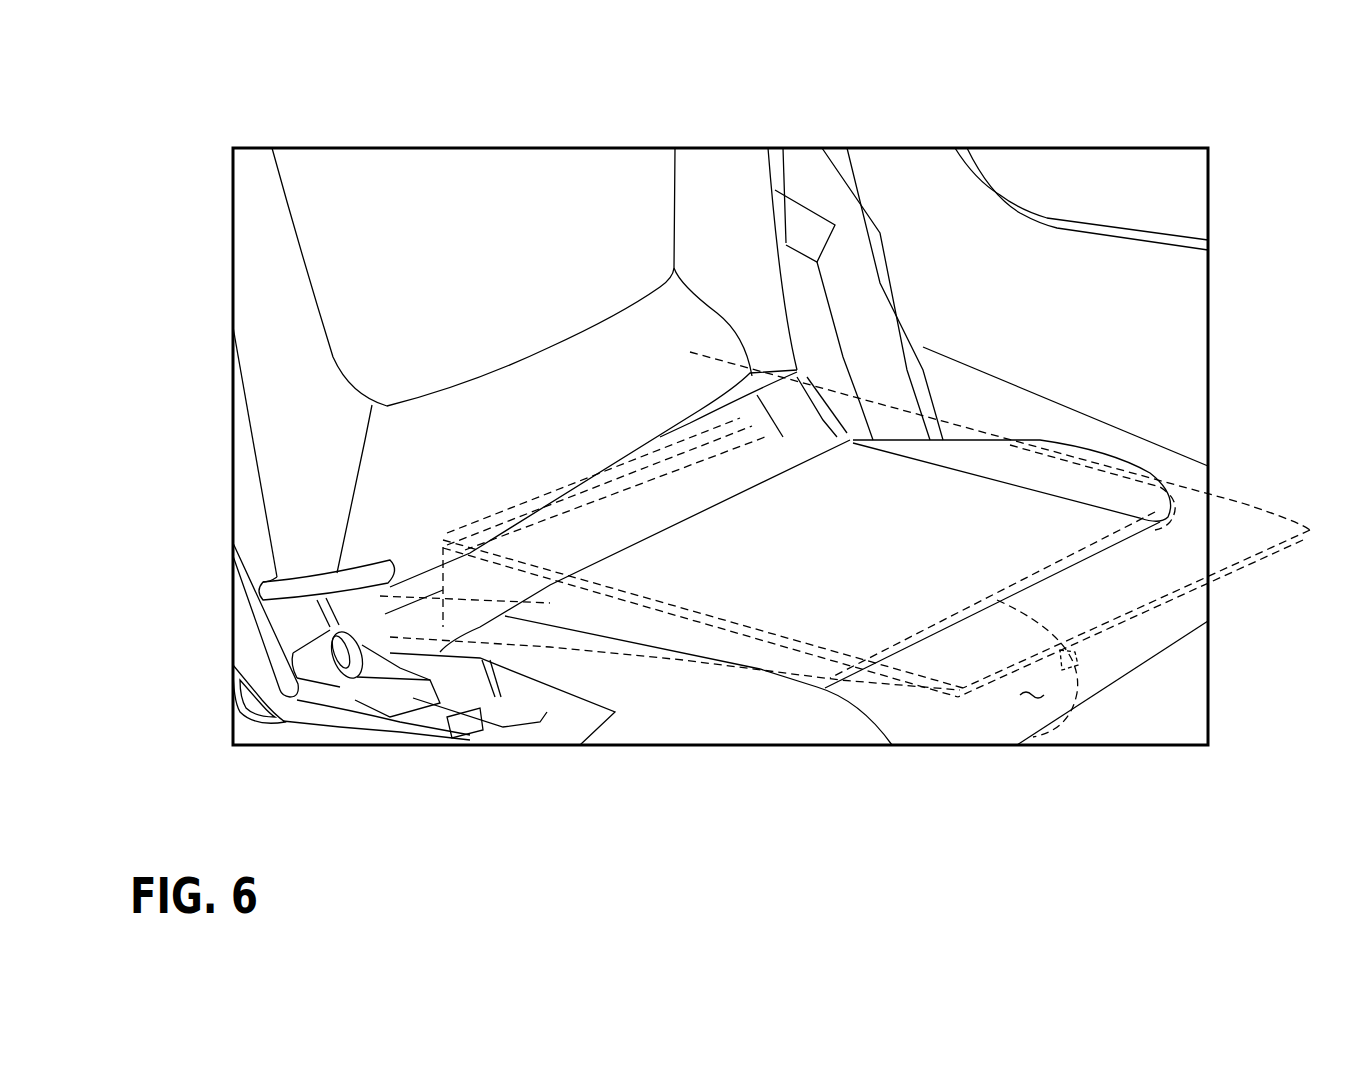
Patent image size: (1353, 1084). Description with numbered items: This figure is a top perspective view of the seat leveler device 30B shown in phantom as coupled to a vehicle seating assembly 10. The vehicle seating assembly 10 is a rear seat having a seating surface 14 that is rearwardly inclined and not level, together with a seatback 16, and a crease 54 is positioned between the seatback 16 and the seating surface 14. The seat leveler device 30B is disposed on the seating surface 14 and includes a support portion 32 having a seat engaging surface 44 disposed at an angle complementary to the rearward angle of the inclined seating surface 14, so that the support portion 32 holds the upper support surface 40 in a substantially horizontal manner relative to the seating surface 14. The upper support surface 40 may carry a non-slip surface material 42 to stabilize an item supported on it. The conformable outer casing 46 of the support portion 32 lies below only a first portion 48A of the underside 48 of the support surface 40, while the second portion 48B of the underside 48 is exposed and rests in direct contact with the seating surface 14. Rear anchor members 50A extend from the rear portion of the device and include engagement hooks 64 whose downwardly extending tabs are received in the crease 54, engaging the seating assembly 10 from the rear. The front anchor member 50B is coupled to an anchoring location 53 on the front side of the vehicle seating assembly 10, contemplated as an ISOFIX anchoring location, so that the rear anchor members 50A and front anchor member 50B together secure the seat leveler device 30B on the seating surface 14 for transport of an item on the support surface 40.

The vehicle seating assembly 10 is at (898, 200).
The seating surface 14 is at (698, 722).
The seatback 16 is at (383, 222).
The seat leveler device 30B is at (968, 412).
The support portion 32 is at (327, 647).
The upper support surface 40 is at (1236, 497).
The non-slip surface material 42 is at (1310, 528).
The seat engaging surface 44 is at (577, 650).
The outer casing 46 is at (400, 590).
The underside 48 is at (957, 690).
The first portion 48A is at (773, 653).
The second portion 48B is at (912, 675).
The anchor members 50A is at (770, 465).
The anchor member 50B is at (1098, 656).
The anchoring location 53 is at (1035, 740).
The crease 54 is at (432, 590).
The engagement hooks 64 is at (635, 450).